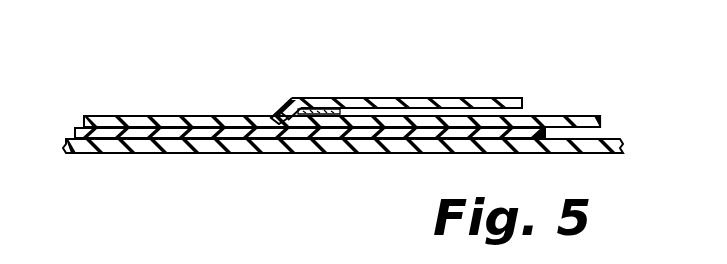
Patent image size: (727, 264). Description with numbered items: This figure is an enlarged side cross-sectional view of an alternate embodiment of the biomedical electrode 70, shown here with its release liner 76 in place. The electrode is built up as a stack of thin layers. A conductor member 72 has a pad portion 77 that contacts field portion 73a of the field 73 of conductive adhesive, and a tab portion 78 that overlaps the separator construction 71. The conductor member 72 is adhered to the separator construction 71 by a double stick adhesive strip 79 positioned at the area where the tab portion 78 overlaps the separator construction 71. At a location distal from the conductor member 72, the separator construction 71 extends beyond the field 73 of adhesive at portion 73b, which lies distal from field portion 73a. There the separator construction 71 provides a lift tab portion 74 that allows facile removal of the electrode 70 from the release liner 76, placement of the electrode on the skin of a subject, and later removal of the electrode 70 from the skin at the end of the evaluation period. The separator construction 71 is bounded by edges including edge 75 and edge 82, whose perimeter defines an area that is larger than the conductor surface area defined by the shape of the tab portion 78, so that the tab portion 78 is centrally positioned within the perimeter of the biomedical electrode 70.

The biomedical electrode 70 is at (447, 75).
The separator construction 71 is at (538, 117).
The conductor member 72 is at (135, 117).
The field of adhesive 73 is at (183, 132).
The field portion 73a is at (133, 133).
The field portion 73b is at (403, 133).
The lift tab portion 74 is at (590, 117).
The edge 75 is at (602, 118).
The release liner 76 is at (312, 146).
The pad portion 77 is at (198, 118).
The tab portion 78 is at (387, 97).
The double stick adhesive strip 79 is at (325, 115).
The edge 82 is at (280, 108).